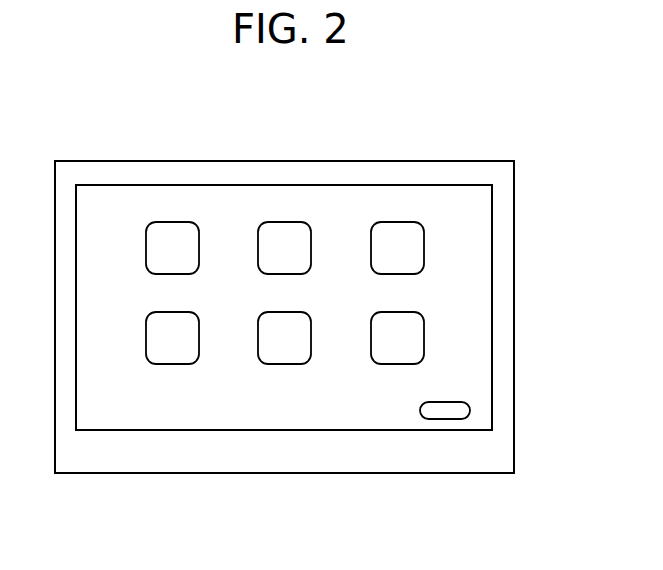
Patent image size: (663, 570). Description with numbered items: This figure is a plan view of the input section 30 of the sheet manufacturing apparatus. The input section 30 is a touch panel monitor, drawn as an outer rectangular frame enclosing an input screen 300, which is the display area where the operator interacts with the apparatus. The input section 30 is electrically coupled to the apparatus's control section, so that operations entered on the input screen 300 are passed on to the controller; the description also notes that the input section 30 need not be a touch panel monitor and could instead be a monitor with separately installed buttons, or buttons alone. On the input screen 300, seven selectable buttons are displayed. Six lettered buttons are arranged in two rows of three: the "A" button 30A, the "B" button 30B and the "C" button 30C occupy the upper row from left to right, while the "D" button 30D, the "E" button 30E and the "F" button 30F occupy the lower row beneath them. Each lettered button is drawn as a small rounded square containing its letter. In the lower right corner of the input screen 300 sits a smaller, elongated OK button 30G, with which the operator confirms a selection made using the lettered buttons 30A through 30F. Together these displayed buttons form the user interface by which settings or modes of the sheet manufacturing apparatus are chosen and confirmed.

The input section 30 is at (516, 112).
The input screen 300 is at (473, 228).
The "A" button 30A is at (172, 222).
The "B" button 30B is at (287, 222).
The "C" button 30C is at (398, 222).
The "D" button 30D is at (176, 364).
The "E" button 30E is at (287, 364).
The "F" button 30F is at (398, 364).
The OK button 30G is at (470, 410).